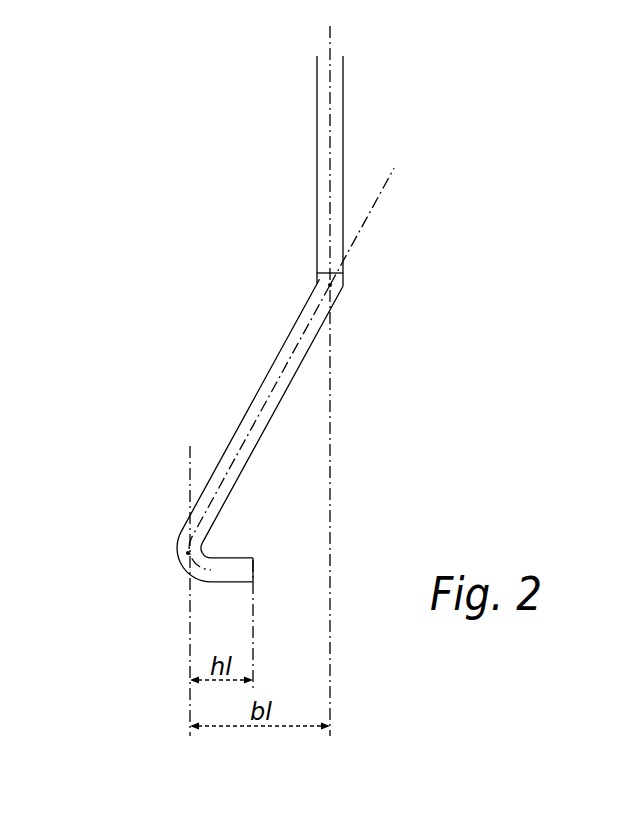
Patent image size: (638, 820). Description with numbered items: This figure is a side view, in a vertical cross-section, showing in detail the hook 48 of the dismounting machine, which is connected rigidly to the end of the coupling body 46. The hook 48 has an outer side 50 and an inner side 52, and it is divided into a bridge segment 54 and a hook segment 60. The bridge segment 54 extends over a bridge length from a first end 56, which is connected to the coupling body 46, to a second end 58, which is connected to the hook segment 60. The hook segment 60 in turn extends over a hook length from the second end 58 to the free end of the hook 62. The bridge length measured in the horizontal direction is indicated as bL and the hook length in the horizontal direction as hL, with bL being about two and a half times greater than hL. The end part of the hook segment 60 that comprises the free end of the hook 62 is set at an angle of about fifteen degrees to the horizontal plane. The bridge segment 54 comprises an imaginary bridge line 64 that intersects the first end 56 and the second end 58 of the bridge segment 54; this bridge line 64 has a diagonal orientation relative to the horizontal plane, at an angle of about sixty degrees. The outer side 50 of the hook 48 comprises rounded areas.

The coupling body 46 is at (318, 118).
The hook 48 is at (132, 294).
The outer side 50 is at (182, 470).
The inner side 52 is at (258, 446).
The bridge segment 54 is at (278, 357).
The first end 56 is at (332, 287).
The second end 58 is at (188, 553).
The hook segment 60 is at (221, 574).
The free end of the hook 62 is at (260, 561).
The bridge line 64 is at (392, 184).